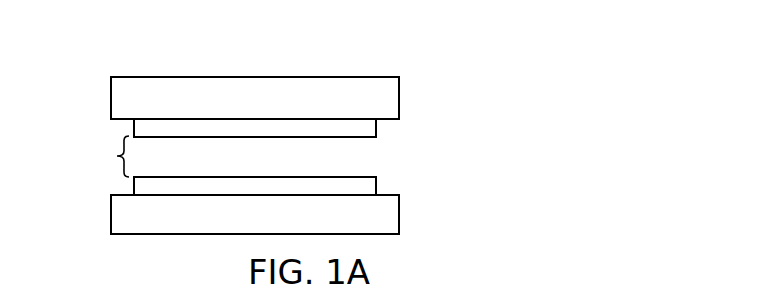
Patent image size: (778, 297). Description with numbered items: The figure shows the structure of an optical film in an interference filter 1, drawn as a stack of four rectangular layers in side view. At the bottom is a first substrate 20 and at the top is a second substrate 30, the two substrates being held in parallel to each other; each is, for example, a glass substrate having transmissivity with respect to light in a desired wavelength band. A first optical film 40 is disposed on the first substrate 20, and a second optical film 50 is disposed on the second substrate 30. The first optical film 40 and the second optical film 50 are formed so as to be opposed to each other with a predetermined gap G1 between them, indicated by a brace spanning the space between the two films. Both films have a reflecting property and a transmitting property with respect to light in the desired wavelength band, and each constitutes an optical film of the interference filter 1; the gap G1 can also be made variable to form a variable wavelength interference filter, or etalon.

The interference filter 1 is at (397, 54).
The first substrate 20 is at (386, 218).
The second substrate 30 is at (389, 99).
The first optical film 40 is at (366, 183).
The second optical film 50 is at (366, 132).
The gap G1 is at (114, 156).